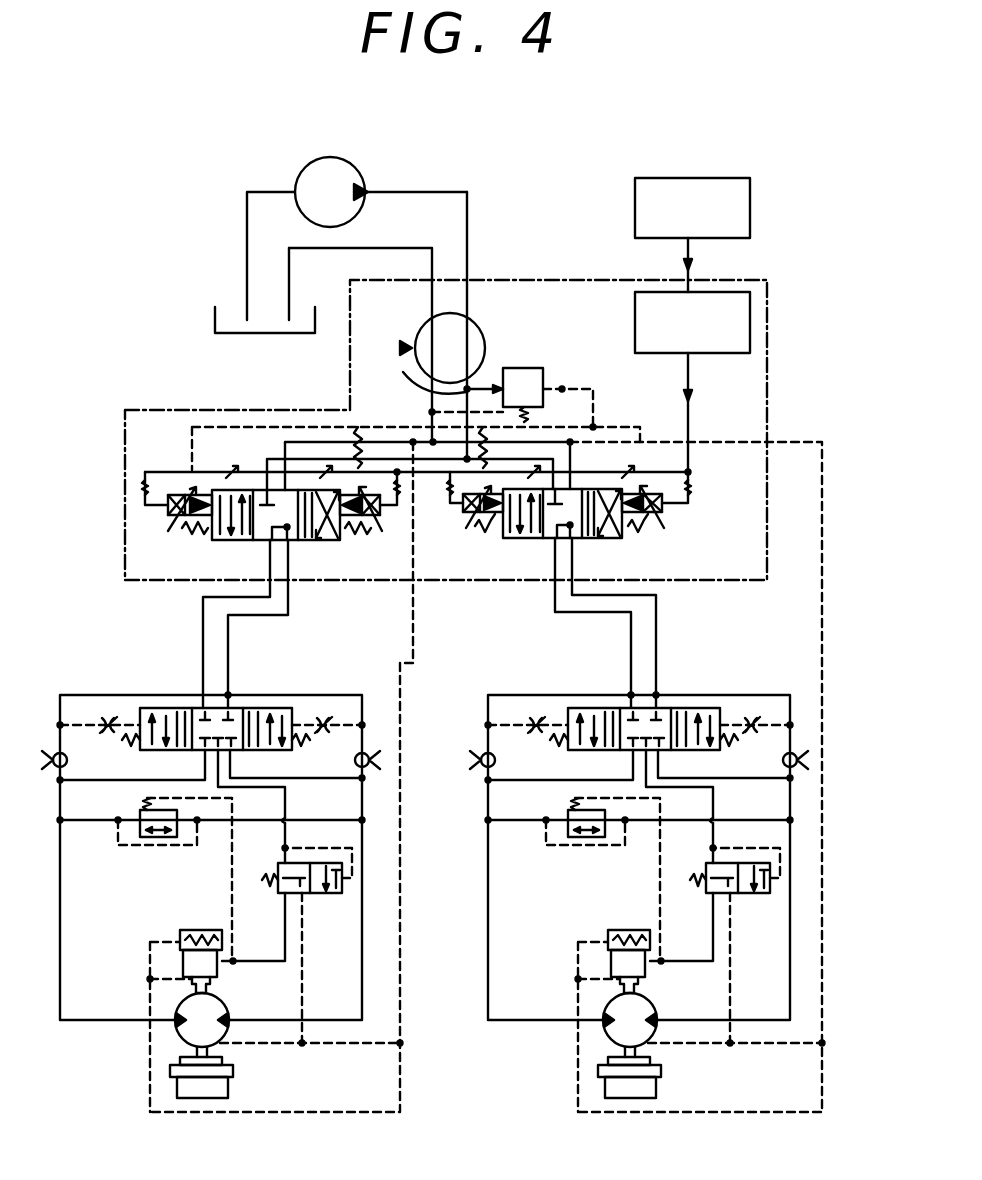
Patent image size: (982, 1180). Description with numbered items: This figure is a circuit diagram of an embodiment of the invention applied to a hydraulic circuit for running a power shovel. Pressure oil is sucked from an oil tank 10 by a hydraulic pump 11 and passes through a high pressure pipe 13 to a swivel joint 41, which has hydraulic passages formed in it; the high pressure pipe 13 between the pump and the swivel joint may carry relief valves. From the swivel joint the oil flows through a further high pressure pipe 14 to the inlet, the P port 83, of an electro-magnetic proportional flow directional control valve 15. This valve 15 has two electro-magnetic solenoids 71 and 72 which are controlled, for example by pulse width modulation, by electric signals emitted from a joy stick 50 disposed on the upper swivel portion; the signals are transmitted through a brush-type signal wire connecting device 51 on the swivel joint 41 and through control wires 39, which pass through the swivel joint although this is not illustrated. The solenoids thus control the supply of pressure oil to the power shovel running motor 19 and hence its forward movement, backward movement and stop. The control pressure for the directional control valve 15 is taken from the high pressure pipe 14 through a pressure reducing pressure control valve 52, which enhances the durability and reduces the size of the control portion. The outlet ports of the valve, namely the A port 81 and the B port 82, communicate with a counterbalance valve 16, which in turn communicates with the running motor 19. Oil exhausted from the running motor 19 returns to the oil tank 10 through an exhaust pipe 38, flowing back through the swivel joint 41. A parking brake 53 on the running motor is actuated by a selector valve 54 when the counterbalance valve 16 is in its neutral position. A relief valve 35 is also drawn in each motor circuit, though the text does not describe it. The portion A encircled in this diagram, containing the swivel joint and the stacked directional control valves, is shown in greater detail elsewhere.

The oil tank 10 is at (209, 300).
The hydraulic pump 11 is at (357, 170).
The high pressure pipe 13 is at (468, 236).
The high pressure pipe 14 is at (423, 371).
The electro-magnetic proportional flow directional control valve 15 is at (578, 465).
The counterbalance valve 16 is at (233, 708).
The power shovel running motor 19 is at (222, 1003).
The relief valve 35 is at (160, 845).
The exhaust pipe 38 is at (385, 427).
The control wires 39 is at (690, 405).
The swivel joint 41 is at (478, 324).
The joy stick 50 is at (752, 211).
The signal wire connecting device 51 is at (752, 327).
The pressure reducing pressure control valve 52 is at (514, 368).
The parking brake 53 is at (202, 928).
The selector valve 54 is at (325, 895).
The electro-magnetic solenoid 71 is at (663, 507).
The electro-magnetic solenoid 72 is at (463, 514).
The A port 81 is at (572, 540).
The B port 82 is at (552, 539).
The P port 83 is at (576, 484).
The portion A is at (173, 410).